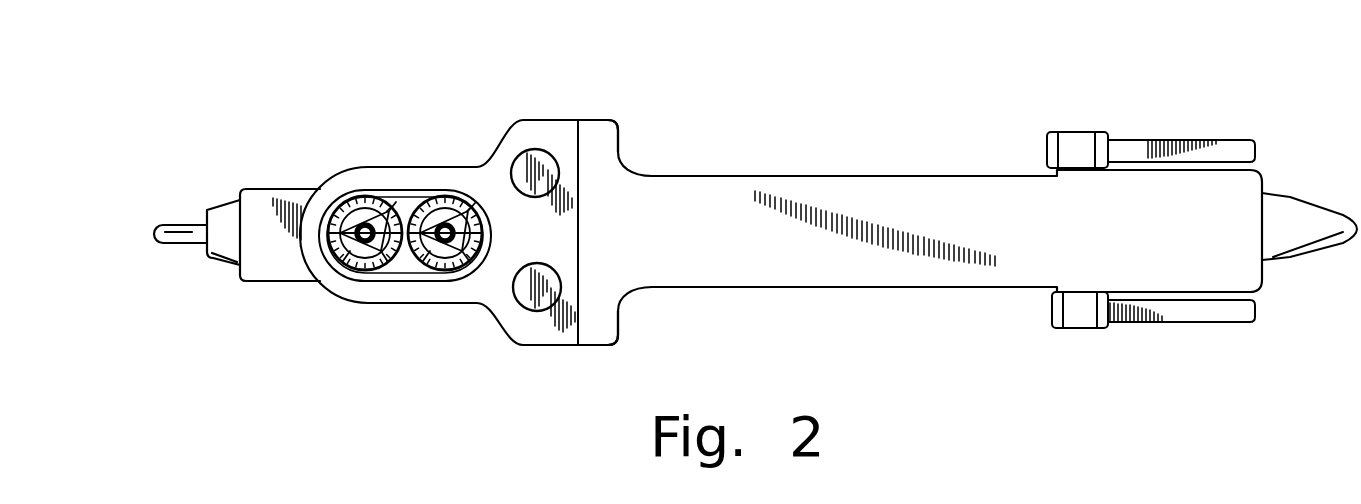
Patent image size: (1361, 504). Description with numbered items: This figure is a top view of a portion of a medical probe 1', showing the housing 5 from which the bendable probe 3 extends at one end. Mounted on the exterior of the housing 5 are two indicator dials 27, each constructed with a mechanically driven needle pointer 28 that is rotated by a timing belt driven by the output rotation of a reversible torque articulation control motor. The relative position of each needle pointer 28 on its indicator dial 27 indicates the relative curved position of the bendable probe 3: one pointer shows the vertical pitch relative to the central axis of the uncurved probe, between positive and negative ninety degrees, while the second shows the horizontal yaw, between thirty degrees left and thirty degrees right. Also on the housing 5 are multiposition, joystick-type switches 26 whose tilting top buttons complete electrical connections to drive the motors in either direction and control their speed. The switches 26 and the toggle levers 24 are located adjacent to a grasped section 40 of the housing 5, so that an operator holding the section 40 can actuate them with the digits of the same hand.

The tool body 1' is at (875, 168).
The bendable probe 3 is at (182, 230).
The housing 5 is at (662, 197).
The toggle levers 24 is at (1132, 152).
The switch 26 is at (527, 172).
The indicator dial 27 is at (372, 203).
The needle pointer 28 is at (380, 242).
The grasped section 40 is at (670, 288).